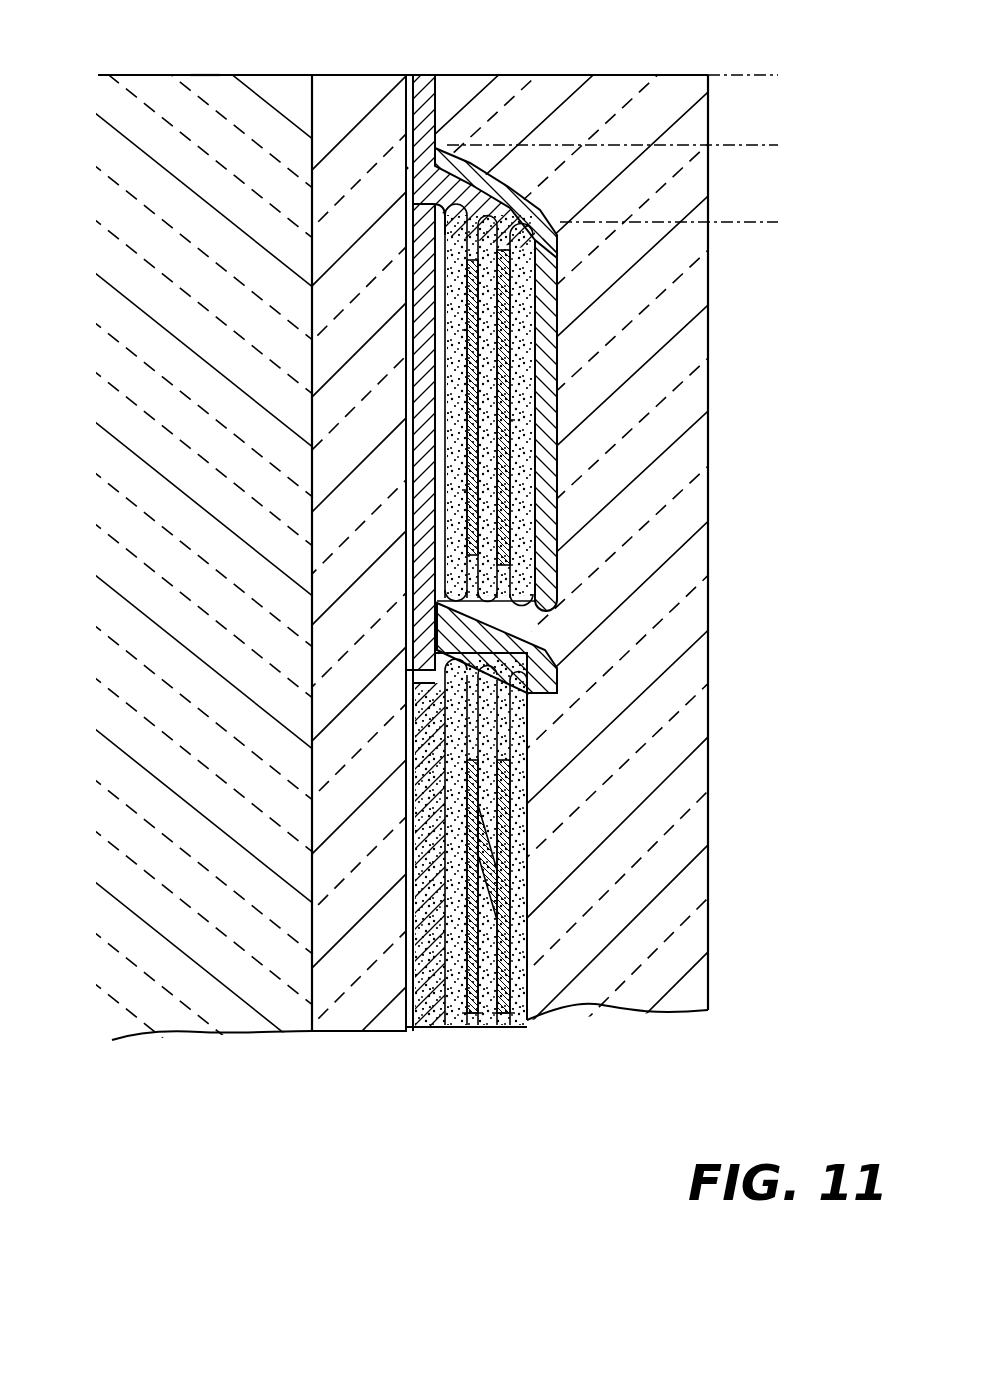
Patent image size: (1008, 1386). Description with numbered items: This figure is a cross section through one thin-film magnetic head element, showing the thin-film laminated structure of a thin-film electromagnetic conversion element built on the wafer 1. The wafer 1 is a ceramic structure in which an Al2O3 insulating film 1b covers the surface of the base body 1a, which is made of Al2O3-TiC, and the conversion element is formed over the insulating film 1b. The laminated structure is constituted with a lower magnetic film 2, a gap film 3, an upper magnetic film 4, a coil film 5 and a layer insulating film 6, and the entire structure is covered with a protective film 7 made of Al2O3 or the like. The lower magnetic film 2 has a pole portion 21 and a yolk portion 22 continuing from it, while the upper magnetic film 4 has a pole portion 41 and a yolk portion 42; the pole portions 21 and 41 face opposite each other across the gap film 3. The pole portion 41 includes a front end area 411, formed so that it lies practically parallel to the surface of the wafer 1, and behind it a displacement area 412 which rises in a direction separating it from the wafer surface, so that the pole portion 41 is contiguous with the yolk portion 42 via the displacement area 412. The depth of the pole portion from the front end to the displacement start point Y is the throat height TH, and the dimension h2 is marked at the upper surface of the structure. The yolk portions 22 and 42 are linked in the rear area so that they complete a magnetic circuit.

The wafer 1 is at (504, 586).
The base body 1a is at (284, 1034).
The insulating film 1b is at (272, 1086).
The lower magnetic film 2 is at (241, 520).
The pole portion 21 is at (400, 121).
The yolk portion 22 is at (412, 459).
The gap film 3 is at (412, 203).
The upper magnetic film 4 is at (641, 518).
The pole portion 41 is at (452, 135).
The front end area 411 is at (767, 75).
The displacement area 412 is at (767, 145).
The yolk portion 42 is at (560, 367).
The coil film 5 is at (465, 331).
The layer insulating film 6 is at (455, 1030).
The protective film 7 is at (675, 448).
The height h2 is at (204, 72).
The displacement start point Y is at (406, 166).